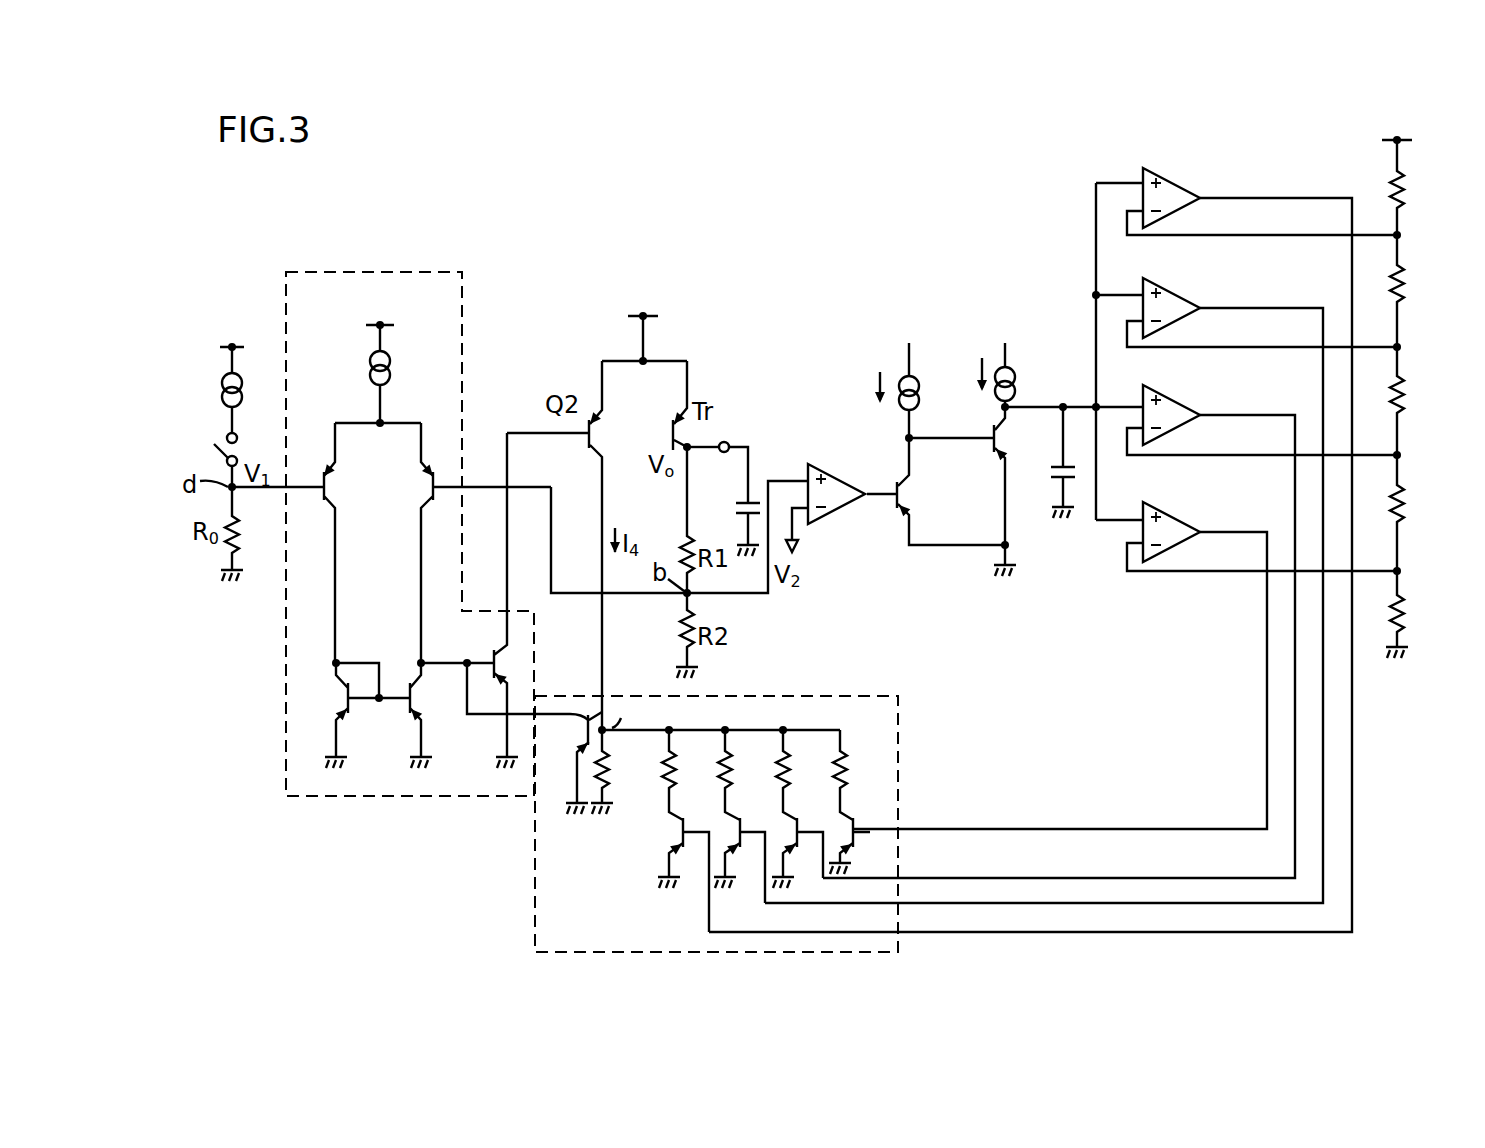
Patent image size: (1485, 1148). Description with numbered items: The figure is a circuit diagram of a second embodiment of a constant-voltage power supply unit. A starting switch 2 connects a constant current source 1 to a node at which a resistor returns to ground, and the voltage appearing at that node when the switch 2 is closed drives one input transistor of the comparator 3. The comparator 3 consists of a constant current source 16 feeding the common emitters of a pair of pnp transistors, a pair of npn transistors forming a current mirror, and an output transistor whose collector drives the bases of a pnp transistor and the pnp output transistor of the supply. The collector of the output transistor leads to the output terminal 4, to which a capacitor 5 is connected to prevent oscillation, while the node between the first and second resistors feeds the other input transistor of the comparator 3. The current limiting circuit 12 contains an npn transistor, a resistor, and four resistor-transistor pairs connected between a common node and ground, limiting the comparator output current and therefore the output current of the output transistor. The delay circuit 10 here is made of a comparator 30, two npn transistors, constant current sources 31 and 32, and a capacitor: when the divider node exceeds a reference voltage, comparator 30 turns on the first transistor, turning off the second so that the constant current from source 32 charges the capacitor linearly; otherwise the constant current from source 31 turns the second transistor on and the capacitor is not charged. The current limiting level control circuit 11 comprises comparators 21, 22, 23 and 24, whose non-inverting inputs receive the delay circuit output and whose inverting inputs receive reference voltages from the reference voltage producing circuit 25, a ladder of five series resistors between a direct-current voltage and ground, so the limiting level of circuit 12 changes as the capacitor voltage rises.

The constant current source 1 is at (244, 396).
The starting switch 2 is at (216, 438).
The comparator 3 is at (434, 270).
The output terminal 4 is at (730, 443).
The capacitor 5 is at (736, 508).
The delay circuit 10 is at (1065, 312).
The current limiting level control circuit 11 is at (1236, 152).
The current limiting circuit 12 is at (533, 878).
The constant current source 16 is at (367, 371).
The comparator 21 is at (1172, 547).
The comparator 22 is at (1172, 430).
The comparator 23 is at (1173, 319).
The comparator 24 is at (1173, 208).
The reference voltage producing circuit 25 is at (1452, 352).
The comparator 30 is at (838, 513).
The constant current source 31 is at (918, 392).
The constant current source 32 is at (1017, 386).